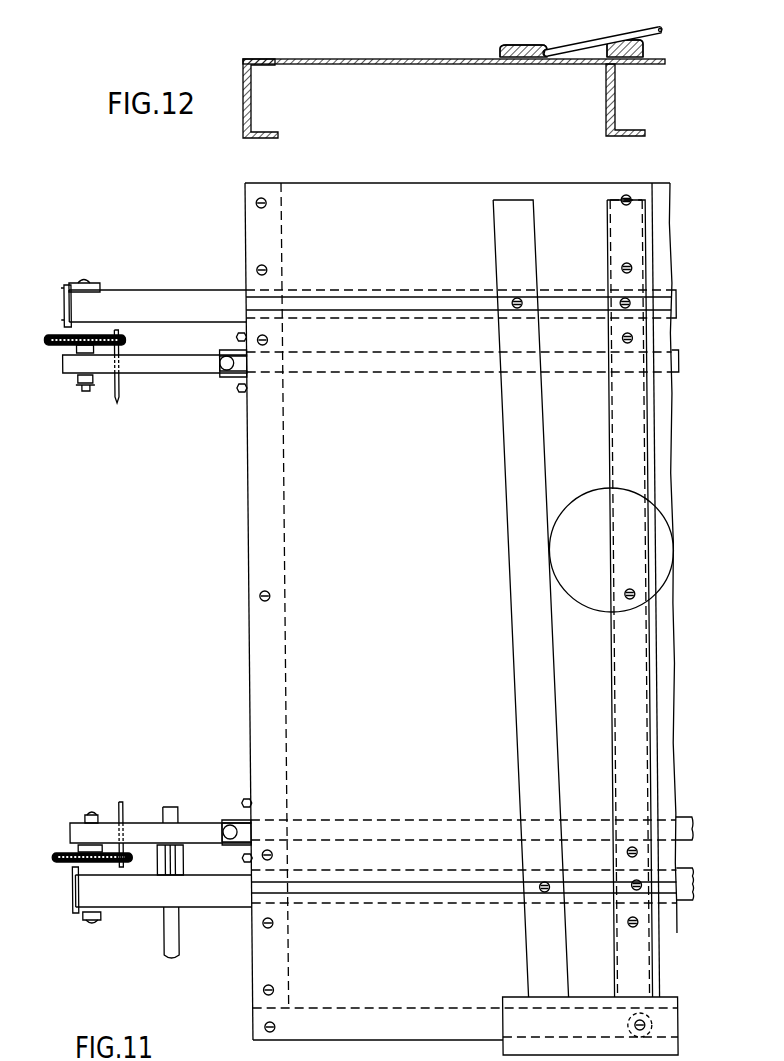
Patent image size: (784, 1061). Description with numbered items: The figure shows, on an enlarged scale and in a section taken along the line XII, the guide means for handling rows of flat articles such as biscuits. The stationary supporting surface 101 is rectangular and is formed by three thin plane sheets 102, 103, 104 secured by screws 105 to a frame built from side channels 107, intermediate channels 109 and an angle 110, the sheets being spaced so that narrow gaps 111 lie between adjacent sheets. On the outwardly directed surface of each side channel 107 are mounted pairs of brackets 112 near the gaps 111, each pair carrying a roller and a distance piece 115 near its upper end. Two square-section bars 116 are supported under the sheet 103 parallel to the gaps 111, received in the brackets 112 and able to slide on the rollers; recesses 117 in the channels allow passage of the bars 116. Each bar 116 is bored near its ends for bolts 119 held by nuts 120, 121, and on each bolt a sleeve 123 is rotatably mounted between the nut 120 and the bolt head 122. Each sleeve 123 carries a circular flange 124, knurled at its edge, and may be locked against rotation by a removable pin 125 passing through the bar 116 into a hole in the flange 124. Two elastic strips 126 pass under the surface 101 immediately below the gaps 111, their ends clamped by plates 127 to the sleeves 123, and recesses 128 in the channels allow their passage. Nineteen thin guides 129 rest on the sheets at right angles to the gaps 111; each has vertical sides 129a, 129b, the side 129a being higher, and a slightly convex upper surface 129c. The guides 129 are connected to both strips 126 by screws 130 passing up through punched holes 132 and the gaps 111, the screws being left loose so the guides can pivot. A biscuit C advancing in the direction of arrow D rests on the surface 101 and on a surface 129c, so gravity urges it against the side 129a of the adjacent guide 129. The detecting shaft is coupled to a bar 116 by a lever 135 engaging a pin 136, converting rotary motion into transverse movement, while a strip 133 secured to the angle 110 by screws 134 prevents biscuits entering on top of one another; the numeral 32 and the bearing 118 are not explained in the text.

In FIG. 11, the shaft 32 is at (174, 925).
In FIG. 11, the stationary supporting surface 101 is at (218, 481).
In FIG. 11, the rectangular sheet 102 is at (465, 966).
In FIG. 12, the rectangular sheet 103 is at (366, 65).
In FIG. 11, the rectangular sheet 103 is at (461, 611).
In FIG. 11, the rectangular sheet 104 is at (458, 240).
In FIG. 11, the screws 105 is at (261, 265).
In FIG. 12, the side channel 107 is at (252, 105).
In FIG. 11, the side channel 107 is at (258, 582).
In FIG. 12, the intermediate channel 109 is at (616, 110).
In FIG. 11, the intermediate channel 109 is at (640, 188).
In FIG. 11, the angle 110 is at (257, 1025).
In FIG. 11, the gaps 111 is at (383, 296).
In FIG. 11, the brackets 112 is at (222, 352).
In FIG. 11, the distance piece 115 is at (218, 374).
In FIG. 11, the bars 116 is at (148, 349).
In FIG. 11, the recesses 117 is at (610, 373).
In FIG. 11, the bearing 118 is at (222, 371).
In FIG. 11, the bolts 119 is at (81, 386).
In FIG. 11, the nut 120 is at (75, 349).
In FIG. 11, the nut 121 is at (76, 379).
In FIG. 11, the bolt head 122 is at (84, 278).
In FIG. 11, the sleeve 123 is at (100, 284).
In FIG. 11, the circular flange 124 is at (55, 335).
In FIG. 11, the removable pin 125 is at (115, 401).
In FIG. 11, the elastic strips 126 is at (181, 290).
In FIG. 11, the plates 127 is at (63, 292).
In FIG. 11, the recesses 128 is at (243, 288).
In FIG. 12, the guides 129 is at (526, 60).
In FIG. 11, the guides 129 is at (493, 237).
In FIG. 12, the vertical side 129a is at (553, 60).
In FIG. 12, the vertical side 129b is at (503, 63).
In FIG. 12, the convex upper surface 129c is at (500, 47).
In FIG. 11, the screws 130 is at (620, 300).
In FIG. 11, the holes 132 is at (620, 308).
In FIG. 11, the strip 133 is at (495, 1025).
In FIG. 11, the screws 134 is at (626, 1025).
In FIG. 11, the lever 135 is at (155, 860).
In FIG. 11, the pin 136 is at (166, 862).
In FIG. 12, the biscuit C is at (662, 33).
In FIG. 11, the biscuit C is at (548, 552).
In FIG. 11, the arrow D is at (578, 437).
In FIG. 11, the section line XII is at (244, 553).